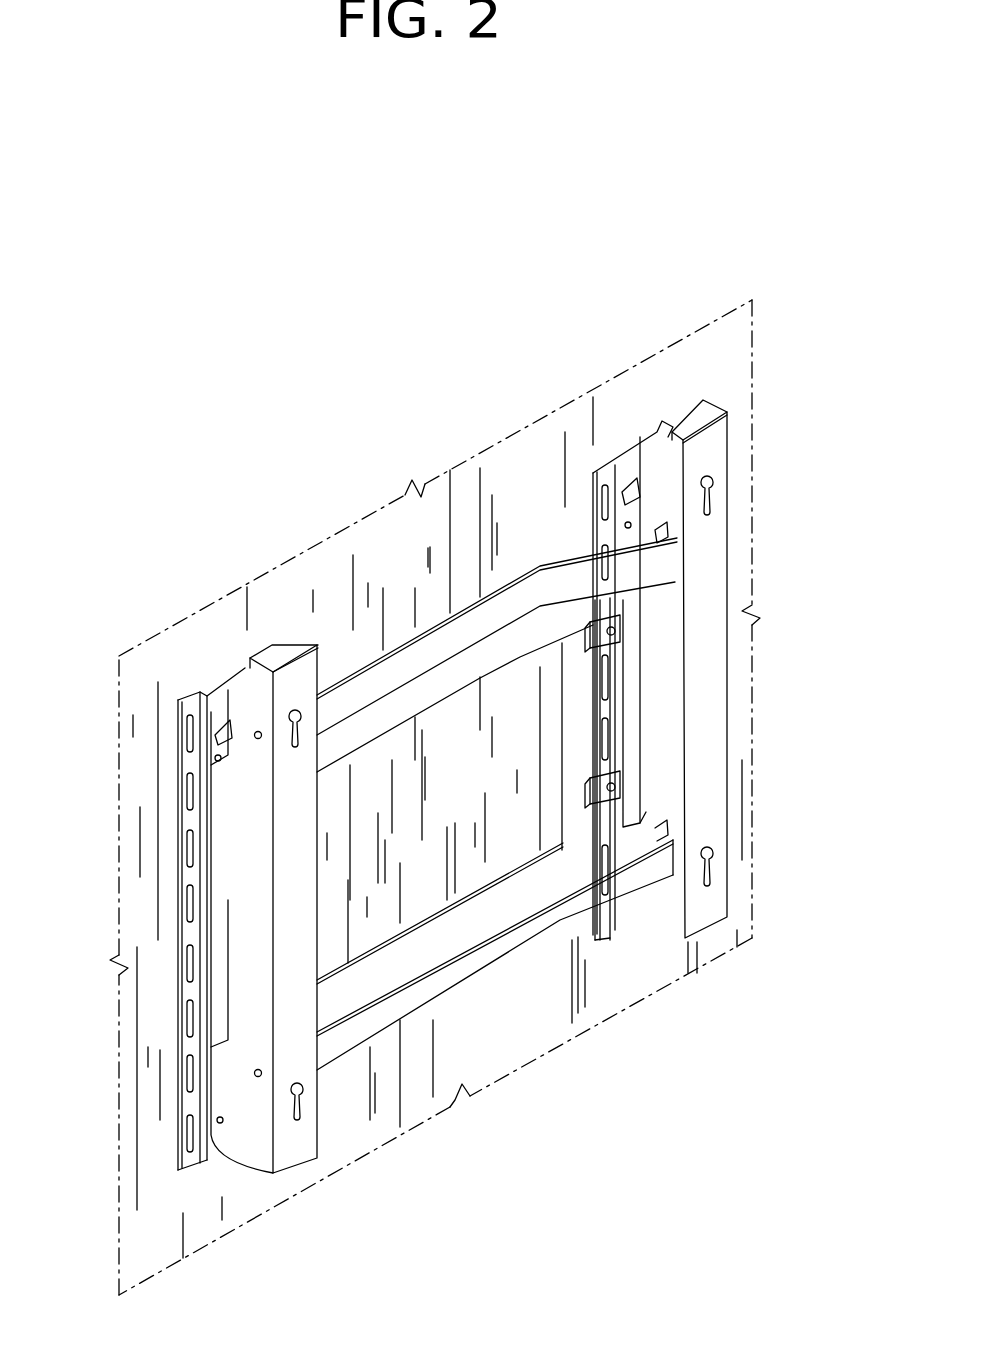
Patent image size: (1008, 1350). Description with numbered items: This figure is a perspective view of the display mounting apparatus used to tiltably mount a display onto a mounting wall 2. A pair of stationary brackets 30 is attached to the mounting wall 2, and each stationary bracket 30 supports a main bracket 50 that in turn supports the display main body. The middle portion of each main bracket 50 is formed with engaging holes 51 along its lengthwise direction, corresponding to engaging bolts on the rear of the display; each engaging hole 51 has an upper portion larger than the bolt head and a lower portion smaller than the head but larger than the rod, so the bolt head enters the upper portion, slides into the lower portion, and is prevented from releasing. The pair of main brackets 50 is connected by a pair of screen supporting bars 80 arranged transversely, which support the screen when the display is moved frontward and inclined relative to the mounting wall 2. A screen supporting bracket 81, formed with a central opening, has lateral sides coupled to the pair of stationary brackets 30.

The mounting wall 2 is at (722, 371).
The stationary bracket 30 is at (222, 700).
The main bracket 50 is at (286, 660).
The engaging hole 51 is at (314, 718).
The screen supporting bar 80 is at (556, 617).
The screen supporting bracket 81 is at (522, 900).